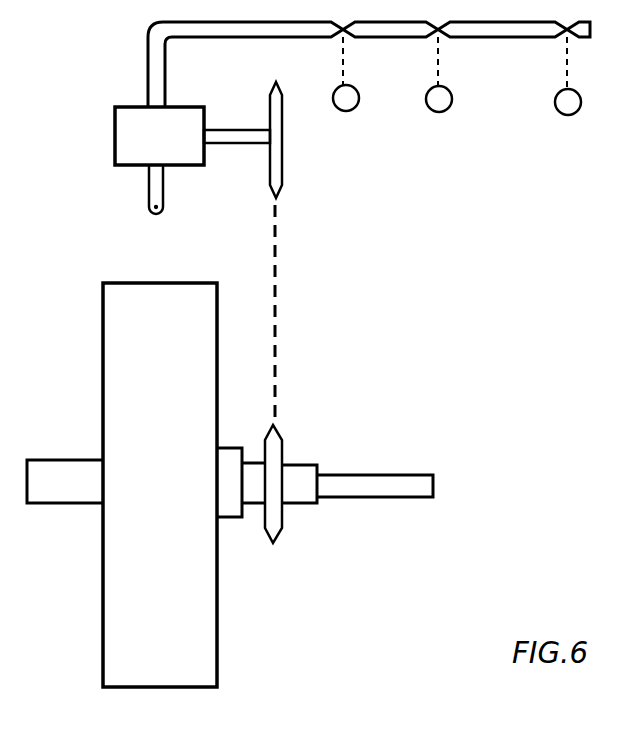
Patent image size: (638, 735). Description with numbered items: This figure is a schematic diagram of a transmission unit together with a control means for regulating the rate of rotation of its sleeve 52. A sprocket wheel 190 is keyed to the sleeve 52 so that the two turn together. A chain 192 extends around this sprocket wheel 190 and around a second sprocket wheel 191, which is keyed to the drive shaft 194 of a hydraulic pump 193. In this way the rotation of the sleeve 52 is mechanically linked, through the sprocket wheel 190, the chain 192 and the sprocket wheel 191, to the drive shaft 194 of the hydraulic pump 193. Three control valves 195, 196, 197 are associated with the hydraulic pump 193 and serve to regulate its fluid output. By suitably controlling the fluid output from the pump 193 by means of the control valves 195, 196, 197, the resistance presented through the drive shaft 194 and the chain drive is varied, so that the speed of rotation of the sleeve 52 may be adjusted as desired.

The sleeve 52 is at (300, 495).
The sprocket wheel 190 is at (283, 445).
The sprocket wheel 191 is at (272, 132).
The chain 192 is at (275, 338).
The hydraulic pump 193 is at (128, 137).
The drive shaft 194 is at (241, 140).
The control valve 195 is at (358, 106).
The control valve 196 is at (445, 100).
The control valve 197 is at (563, 107).